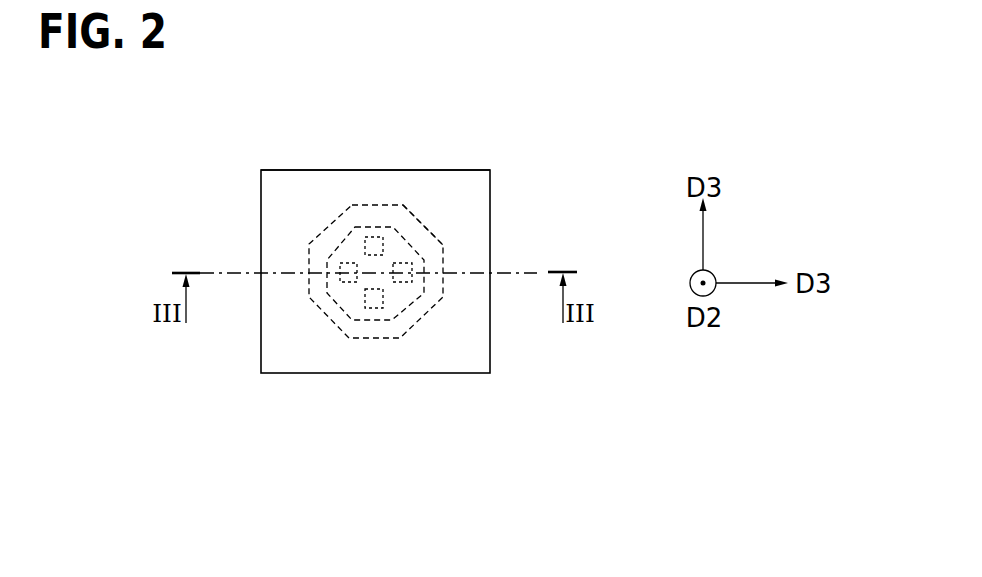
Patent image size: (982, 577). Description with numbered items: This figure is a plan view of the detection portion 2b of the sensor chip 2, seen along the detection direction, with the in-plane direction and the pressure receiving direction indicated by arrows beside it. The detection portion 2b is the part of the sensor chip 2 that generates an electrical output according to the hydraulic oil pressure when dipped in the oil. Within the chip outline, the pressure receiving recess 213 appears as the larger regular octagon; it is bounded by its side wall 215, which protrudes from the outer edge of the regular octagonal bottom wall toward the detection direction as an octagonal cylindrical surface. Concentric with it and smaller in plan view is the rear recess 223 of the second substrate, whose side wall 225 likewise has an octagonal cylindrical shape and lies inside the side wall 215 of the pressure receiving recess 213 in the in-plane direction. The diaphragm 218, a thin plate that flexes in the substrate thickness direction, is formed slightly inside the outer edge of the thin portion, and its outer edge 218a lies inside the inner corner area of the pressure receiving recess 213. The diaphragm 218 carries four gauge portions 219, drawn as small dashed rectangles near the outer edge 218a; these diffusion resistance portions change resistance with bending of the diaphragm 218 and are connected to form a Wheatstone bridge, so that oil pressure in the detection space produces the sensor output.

The sensor chip 2 is at (494, 166).
The detection portion 2b is at (344, 185).
The pressure receiving recess 213 is at (429, 311).
The side wall 215 is at (392, 340).
The diaphragm 218 is at (428, 228).
The outer edge of diaphragm 218a is at (421, 253).
The gauge portion 219 is at (370, 226).
The rear recess 223 is at (344, 245).
The side wall of rear recess 225 is at (343, 300).